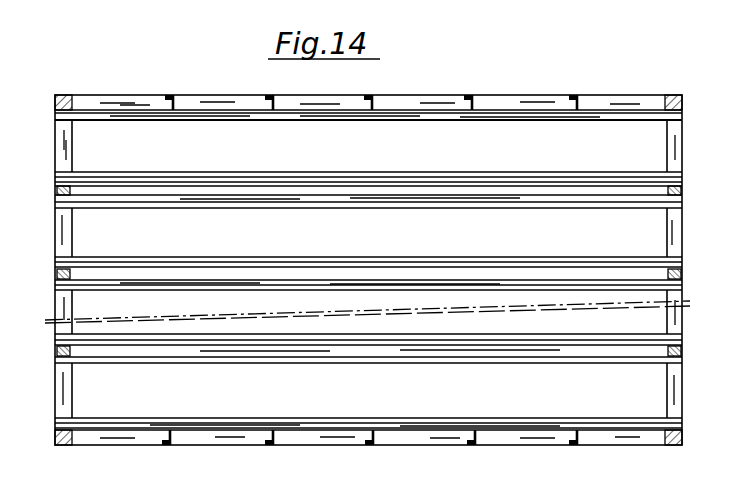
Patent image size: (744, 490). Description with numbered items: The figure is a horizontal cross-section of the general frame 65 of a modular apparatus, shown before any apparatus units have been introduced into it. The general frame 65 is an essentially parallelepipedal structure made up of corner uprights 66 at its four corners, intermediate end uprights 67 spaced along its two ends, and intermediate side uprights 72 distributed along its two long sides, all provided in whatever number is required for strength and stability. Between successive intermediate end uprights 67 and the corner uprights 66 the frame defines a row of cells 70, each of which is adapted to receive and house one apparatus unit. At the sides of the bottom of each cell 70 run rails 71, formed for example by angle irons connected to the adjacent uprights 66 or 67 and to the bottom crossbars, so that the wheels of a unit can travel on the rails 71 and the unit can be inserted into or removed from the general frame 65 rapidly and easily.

The general frame 65 is at (632, 449).
The corner uprights 66 is at (58, 440).
The intermediate end uprights 67 is at (682, 190).
The cells 70 is at (618, 233).
The rails 71 is at (103, 204).
The intermediate side uprights 72 is at (577, 94).